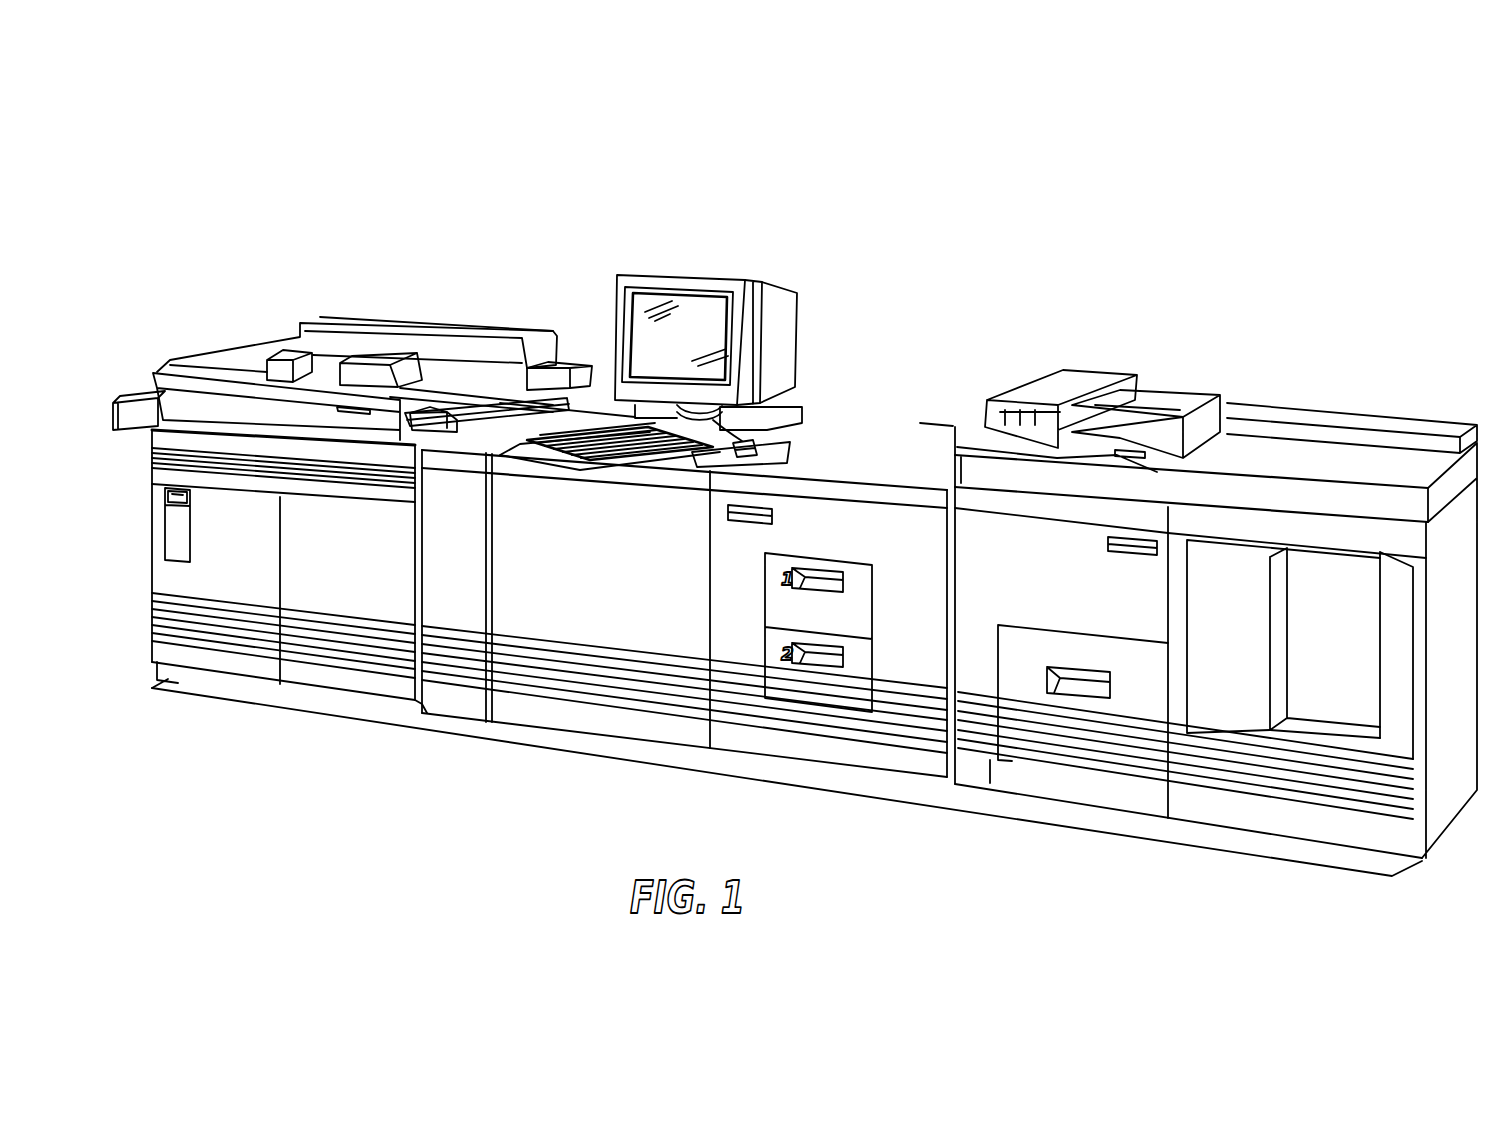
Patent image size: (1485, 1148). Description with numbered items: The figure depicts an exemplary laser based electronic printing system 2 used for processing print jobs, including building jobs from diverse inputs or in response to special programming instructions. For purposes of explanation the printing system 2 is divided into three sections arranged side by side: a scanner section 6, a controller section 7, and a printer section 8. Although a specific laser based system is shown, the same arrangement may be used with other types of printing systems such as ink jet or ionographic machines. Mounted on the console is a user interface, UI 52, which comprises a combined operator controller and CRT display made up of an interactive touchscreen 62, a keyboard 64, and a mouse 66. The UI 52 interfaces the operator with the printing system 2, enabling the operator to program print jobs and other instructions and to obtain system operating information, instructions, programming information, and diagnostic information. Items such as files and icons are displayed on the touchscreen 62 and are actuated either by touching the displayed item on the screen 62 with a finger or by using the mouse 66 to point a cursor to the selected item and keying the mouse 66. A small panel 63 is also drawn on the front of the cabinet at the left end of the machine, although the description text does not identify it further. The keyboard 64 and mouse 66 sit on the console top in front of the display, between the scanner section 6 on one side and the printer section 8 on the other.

The printing system 2 is at (945, 160).
The scanner section 6 is at (405, 300).
The controller section 7 is at (137, 606).
The printer section 8 is at (917, 336).
The UI 52 is at (651, 377).
The interactive touchscreen 62 is at (643, 340).
The control panel 63 is at (177, 533).
The keyboard 64 is at (597, 463).
The mouse 66 is at (698, 476).